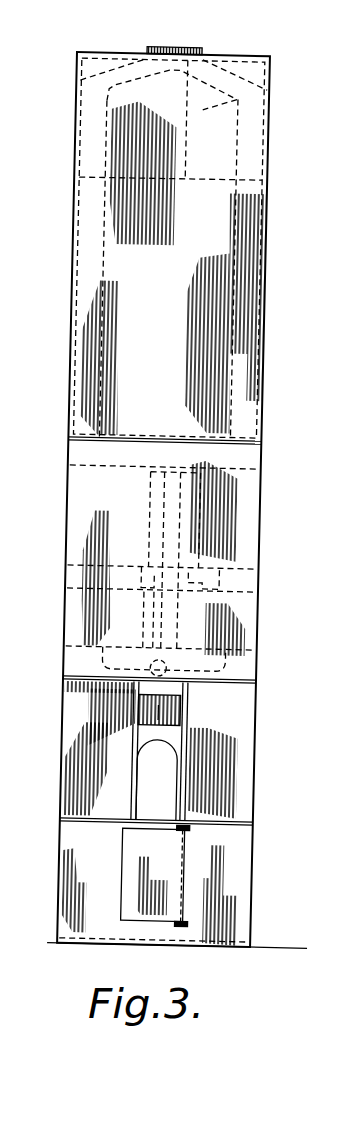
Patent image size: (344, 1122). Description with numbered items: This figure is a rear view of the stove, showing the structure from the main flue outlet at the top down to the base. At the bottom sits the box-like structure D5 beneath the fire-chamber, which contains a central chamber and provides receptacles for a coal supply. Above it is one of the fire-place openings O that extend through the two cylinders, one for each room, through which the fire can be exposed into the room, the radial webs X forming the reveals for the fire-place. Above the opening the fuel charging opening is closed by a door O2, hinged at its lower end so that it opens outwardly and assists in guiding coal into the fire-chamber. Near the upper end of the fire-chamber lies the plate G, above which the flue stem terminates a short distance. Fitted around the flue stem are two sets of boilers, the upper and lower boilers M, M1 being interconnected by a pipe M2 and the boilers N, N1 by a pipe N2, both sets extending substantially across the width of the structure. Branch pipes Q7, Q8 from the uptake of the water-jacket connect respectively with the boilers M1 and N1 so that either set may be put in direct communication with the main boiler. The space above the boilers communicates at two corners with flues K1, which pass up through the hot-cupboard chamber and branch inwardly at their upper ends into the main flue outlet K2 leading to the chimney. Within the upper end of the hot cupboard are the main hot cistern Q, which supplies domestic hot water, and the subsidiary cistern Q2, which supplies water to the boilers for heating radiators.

The main flue outlet K2 is at (183, 50).
The flues K1 is at (96, 190).
The main hot cistern Q is at (154, 248).
The subsidiary cistern Q2 is at (238, 96).
The boiler M is at (162, 557).
The pipe M2 is at (111, 569).
The boiler M1 is at (132, 617).
The boiler N is at (223, 504).
The pipe N2 is at (222, 579).
The boiler N1 is at (206, 622).
The plate G is at (247, 676).
The branch pipe Q7 is at (149, 660).
The radial webs X is at (288, 758).
The branch pipe Q8 is at (227, 680).
The doors O2 is at (173, 708).
The openings O is at (162, 790).
The box-like structure D5 is at (216, 867).